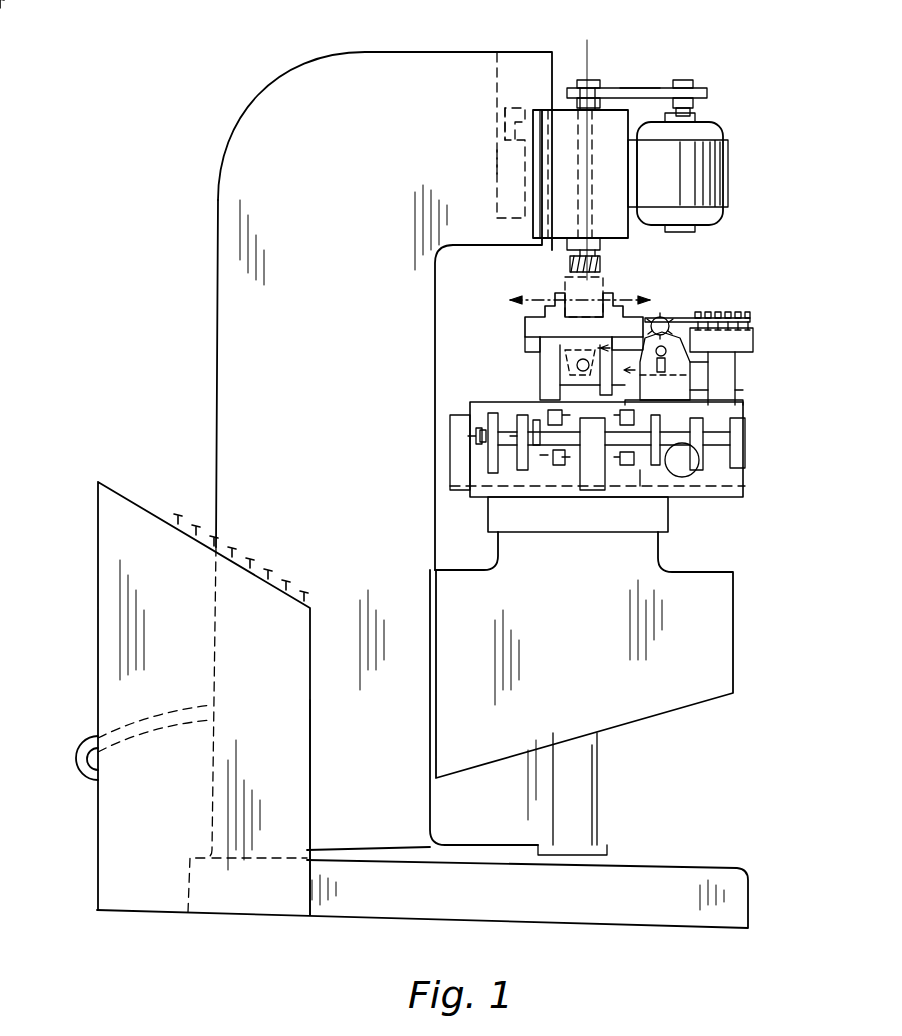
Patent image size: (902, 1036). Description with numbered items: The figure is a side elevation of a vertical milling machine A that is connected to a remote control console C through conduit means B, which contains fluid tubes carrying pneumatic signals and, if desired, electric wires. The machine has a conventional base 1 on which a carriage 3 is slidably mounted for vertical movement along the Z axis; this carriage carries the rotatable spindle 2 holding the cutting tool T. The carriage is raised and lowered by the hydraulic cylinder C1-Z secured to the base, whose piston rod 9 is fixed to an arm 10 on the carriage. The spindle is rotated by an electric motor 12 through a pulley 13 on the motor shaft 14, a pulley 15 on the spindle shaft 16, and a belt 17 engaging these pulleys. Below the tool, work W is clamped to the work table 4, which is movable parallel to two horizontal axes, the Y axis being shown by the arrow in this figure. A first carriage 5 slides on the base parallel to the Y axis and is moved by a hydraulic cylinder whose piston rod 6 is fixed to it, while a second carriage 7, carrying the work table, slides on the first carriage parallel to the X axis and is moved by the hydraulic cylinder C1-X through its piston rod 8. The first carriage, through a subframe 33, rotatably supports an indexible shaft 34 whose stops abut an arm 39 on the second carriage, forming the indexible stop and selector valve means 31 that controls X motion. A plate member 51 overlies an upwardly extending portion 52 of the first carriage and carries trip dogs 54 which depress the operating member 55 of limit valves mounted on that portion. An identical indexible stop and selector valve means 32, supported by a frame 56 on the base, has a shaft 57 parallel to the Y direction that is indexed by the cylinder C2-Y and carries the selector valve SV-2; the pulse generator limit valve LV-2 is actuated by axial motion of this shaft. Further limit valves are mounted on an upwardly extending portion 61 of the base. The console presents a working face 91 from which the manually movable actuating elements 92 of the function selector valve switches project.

The base 1 is at (372, 50).
The milling machine A is at (216, 278).
The arm 10 is at (497, 95).
The piston rod 9 is at (505, 128).
The hydraulic cylinder C1-Z is at (497, 160).
The carriage 3 is at (556, 85).
The vertical axis Z is at (590, 58).
The spindle shaft 16 is at (594, 112).
The pulley 13 is at (707, 93).
The pulley 15 is at (604, 88).
The belt 17 is at (640, 88).
The motor shaft 14 is at (690, 82).
The electric motor 12 is at (724, 172).
The spindle 2 is at (600, 243).
The cutting tool T is at (600, 262).
The work W is at (565, 285).
The Y axis Y is at (578, 299).
The work table 4 is at (525, 316).
The piston rod 8 is at (560, 362).
The hydraulic cylinder C1-X is at (568, 380).
The shaft 34 is at (666, 320).
The arm 39 is at (680, 330).
The plate member 51 is at (752, 320).
The trip dogs 54 is at (744, 313).
The operating member 55 is at (755, 336).
The second carriage 7 is at (745, 352).
The indexible stop and selector valve means 31 is at (735, 358).
The upwardly extending portion 52 is at (735, 380).
The subframe 33 is at (735, 396).
The first carriage 5 is at (744, 430).
The piston rod 6 is at (722, 465).
The cylinder C2-Y is at (694, 472).
The shaft 57 is at (620, 442).
The frame 56 is at (642, 488).
The indexible stop and selector valve means 32 is at (559, 474).
The limit valve LV-2 is at (484, 462).
The selector valve SV-2 is at (512, 455).
The upwardly extending portion 61 is at (590, 482).
The working face 91 is at (128, 496).
The actuating elements 92 is at (238, 546).
The conduit means B is at (88, 740).
The remote control console C is at (310, 772).